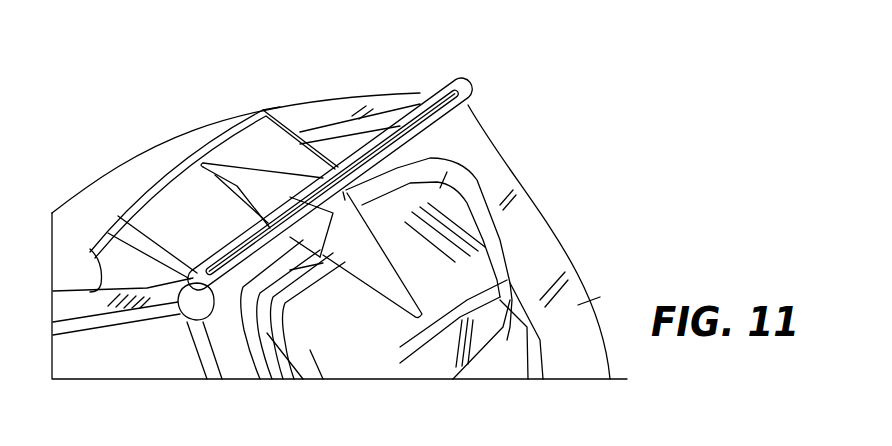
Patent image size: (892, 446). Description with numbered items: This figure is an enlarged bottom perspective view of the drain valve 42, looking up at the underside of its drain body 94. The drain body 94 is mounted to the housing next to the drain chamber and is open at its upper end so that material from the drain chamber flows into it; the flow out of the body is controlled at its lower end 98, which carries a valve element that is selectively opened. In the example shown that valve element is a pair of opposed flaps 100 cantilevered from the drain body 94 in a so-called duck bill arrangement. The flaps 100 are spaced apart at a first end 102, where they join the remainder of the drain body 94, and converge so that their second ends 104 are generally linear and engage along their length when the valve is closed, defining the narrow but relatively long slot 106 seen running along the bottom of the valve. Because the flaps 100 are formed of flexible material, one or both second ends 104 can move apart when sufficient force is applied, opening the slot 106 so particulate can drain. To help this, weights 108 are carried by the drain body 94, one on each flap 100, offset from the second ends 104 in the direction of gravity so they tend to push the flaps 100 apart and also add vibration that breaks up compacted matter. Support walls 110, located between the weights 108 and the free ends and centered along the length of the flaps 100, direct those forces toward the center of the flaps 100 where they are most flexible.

The drain valve 42 is at (603, 151).
The drain body 94 is at (140, 353).
The lower end 98 is at (463, 108).
The flaps 100 is at (390, 133).
The first end 102 is at (280, 107).
The second ends 104 is at (450, 127).
The slot 106 is at (270, 238).
The weights 108 is at (170, 207).
The support walls 110 is at (288, 190).